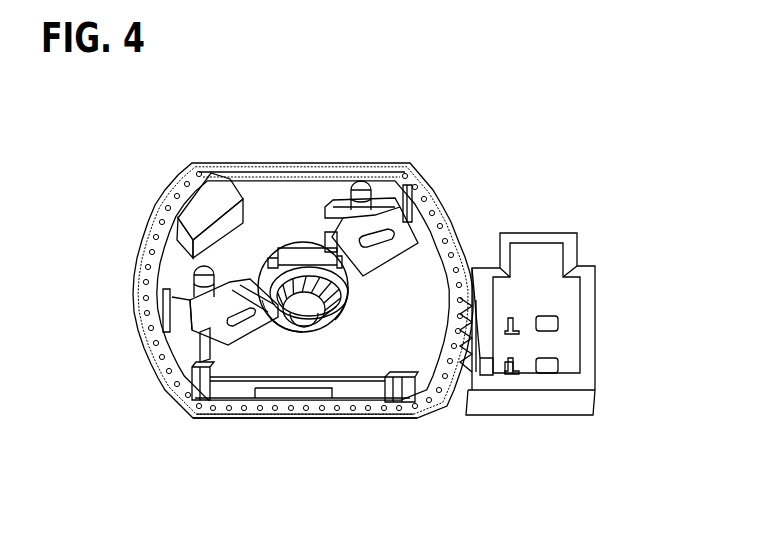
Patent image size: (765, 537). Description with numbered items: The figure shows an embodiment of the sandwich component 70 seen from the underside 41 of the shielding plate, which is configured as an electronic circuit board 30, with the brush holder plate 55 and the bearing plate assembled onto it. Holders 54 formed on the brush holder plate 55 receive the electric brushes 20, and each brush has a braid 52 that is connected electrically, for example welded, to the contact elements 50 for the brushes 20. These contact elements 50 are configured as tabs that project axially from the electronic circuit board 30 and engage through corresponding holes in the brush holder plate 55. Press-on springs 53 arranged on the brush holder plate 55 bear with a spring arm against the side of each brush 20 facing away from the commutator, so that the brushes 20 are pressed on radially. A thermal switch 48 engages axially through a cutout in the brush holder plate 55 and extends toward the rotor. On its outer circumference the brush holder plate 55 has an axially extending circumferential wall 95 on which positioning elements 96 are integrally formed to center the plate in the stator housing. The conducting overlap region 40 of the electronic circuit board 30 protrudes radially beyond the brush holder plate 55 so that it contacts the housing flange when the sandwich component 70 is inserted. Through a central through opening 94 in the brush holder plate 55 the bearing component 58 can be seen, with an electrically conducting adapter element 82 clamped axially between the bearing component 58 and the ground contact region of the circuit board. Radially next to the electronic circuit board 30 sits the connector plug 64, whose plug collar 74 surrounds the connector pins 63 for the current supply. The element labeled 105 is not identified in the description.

The electric brushes 20 is at (398, 262).
The electronic circuit board 30 is at (444, 216).
The overlap region 40 is at (222, 420).
The underside 41 is at (190, 268).
The thermal switch 48 is at (224, 184).
The contact elements 50 is at (405, 200).
The braid 52 is at (185, 340).
The press-on springs 53 is at (351, 204).
The holders 54 is at (185, 385).
The brush holder plate 55 is at (300, 400).
The bearing component 58 is at (378, 315).
The connector pins 63 is at (560, 365).
The connector plug 64 is at (547, 288).
The sandwich component 70 is at (167, 184).
The plug collar 74 is at (551, 233).
The adapter element 82 is at (298, 253).
The central through opening 94 is at (332, 323).
The circumferential wall 95 is at (245, 413).
The positioning elements 96 is at (420, 408).
The connector terminal 105 is at (508, 385).